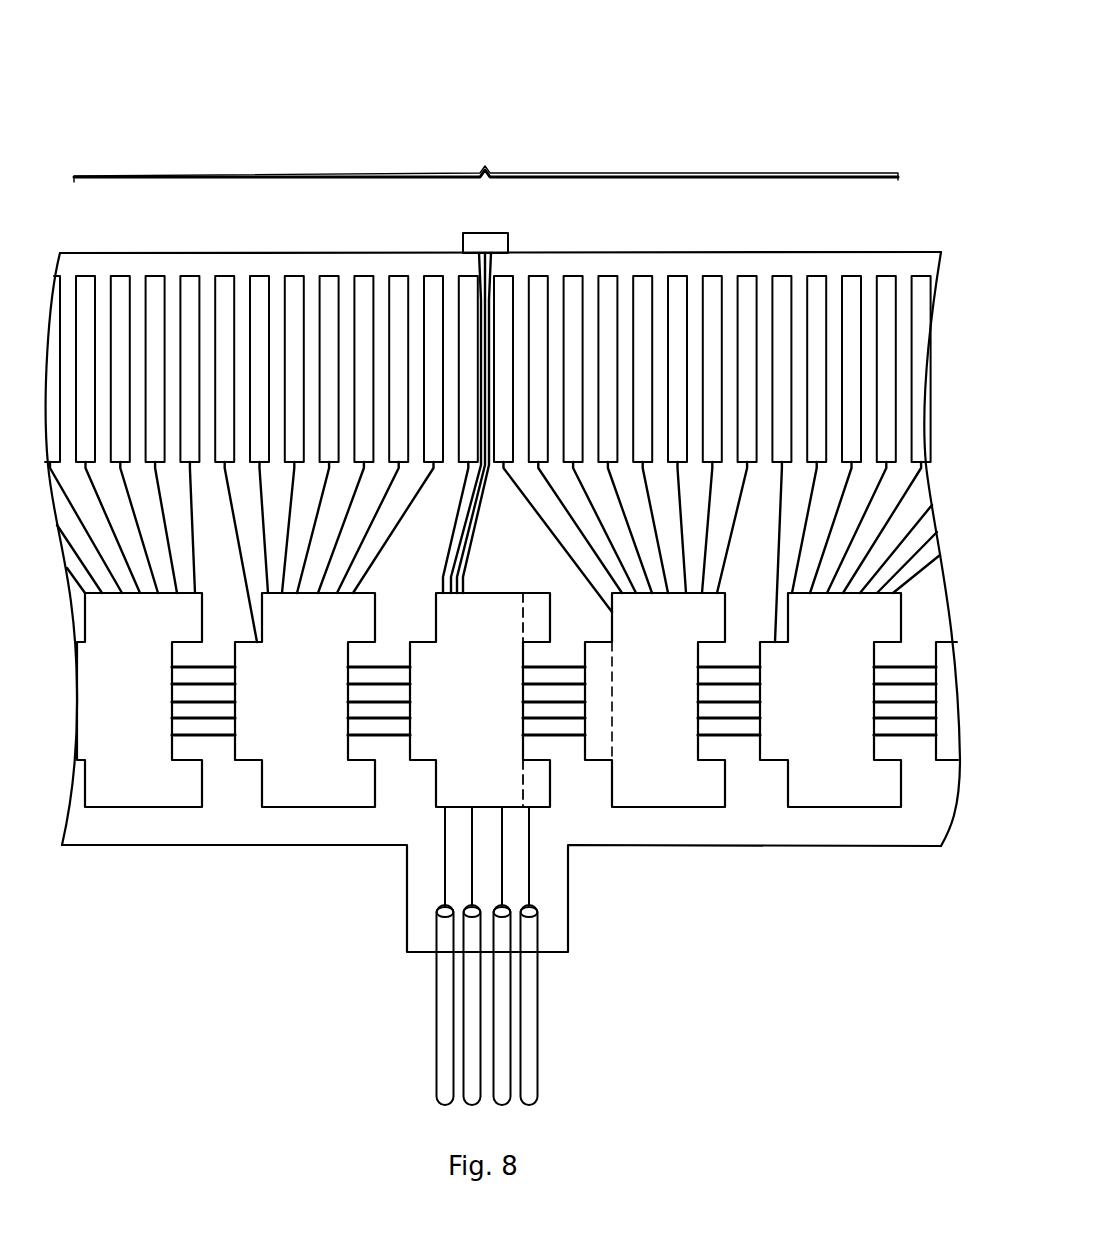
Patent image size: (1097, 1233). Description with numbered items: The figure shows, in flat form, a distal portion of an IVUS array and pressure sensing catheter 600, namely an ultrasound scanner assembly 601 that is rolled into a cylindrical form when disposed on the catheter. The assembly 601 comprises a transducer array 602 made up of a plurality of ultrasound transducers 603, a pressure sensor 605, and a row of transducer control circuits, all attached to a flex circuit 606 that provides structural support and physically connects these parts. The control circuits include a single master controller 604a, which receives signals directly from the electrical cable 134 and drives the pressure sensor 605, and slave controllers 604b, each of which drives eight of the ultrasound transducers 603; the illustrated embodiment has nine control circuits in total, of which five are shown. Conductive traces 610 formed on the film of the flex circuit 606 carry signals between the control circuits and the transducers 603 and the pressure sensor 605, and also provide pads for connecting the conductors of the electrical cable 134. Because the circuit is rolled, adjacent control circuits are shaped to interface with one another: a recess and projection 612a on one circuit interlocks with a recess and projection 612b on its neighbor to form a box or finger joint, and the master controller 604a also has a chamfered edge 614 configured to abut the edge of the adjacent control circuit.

The IVUS array and pressure sensing catheter 600 is at (745, 72).
The ultrasound scanner assembly 601 is at (631, 126).
The transducer array 602 is at (486, 159).
The ultrasound transducers 603 is at (712, 274).
The pressure sensor 605 is at (460, 243).
The master controller 604a is at (508, 693).
The slave controllers 604b is at (158, 693).
The flex circuit 606 is at (222, 847).
The conductive traces 610 is at (738, 738).
The recess and projection 612a is at (358, 759).
The recess and projection 612b is at (424, 758).
The chamfered edge 614 is at (523, 592).
The electrical cable 134 is at (538, 1020).